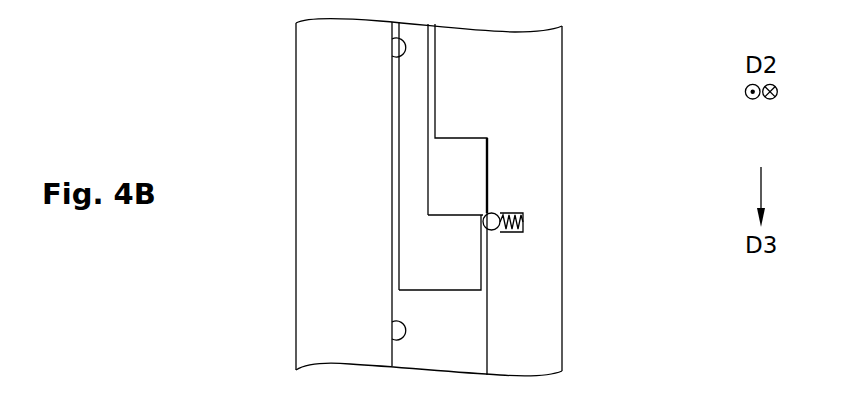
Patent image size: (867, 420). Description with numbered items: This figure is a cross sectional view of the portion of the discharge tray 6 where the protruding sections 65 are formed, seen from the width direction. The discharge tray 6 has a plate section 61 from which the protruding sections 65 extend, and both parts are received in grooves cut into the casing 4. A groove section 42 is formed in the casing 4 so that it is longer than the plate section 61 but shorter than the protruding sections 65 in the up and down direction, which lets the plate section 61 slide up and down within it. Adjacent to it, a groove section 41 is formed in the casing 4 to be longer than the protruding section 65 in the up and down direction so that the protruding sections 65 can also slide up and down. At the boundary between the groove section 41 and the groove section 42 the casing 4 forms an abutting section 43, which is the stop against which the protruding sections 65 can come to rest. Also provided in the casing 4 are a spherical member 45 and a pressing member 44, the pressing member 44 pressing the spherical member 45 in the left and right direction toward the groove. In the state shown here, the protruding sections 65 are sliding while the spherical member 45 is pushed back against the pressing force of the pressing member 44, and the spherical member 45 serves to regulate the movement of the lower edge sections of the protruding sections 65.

The casing 4 is at (529, 80).
The discharge tray 6 is at (393, 153).
The groove section 41 is at (392, 321).
The groove section 42 is at (392, 38).
The abutting section 43 is at (468, 140).
The pressing member 44 is at (523, 214).
The spherical member 45 is at (494, 229).
The plate section 61 is at (415, 95).
The protruding section 65 is at (415, 265).